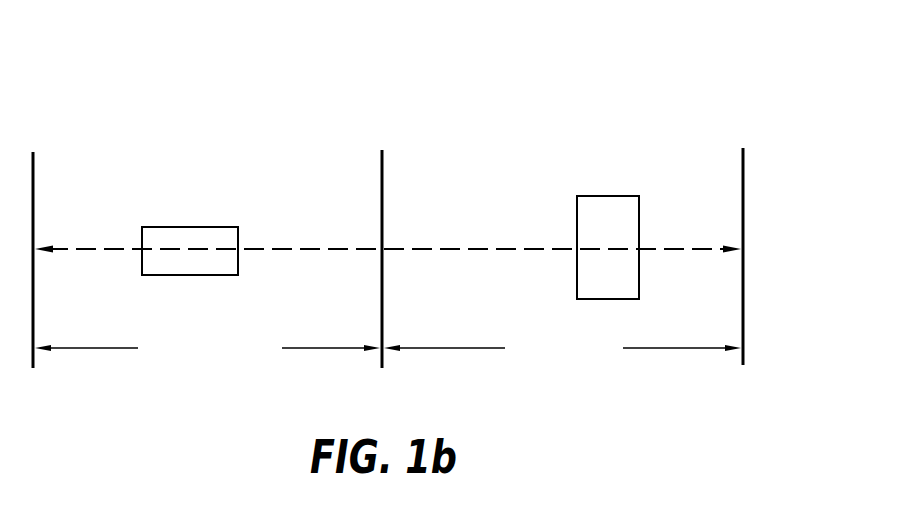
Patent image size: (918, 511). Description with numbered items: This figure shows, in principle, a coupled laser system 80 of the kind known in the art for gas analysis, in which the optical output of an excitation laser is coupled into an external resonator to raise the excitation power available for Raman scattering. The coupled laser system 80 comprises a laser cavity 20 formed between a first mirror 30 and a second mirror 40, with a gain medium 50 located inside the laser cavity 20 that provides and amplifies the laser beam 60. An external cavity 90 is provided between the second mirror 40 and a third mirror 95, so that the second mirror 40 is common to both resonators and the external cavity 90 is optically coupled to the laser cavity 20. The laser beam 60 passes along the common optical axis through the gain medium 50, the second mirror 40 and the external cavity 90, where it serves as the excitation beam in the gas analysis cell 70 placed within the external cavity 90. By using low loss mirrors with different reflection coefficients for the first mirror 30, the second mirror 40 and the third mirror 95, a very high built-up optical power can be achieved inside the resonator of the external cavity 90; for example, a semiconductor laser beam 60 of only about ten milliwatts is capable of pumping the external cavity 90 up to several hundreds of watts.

The coupled laser system 80 is at (340, 90).
The first mirror 30 is at (33, 175).
The second mirror 40 is at (382, 163).
The third mirror 95 is at (743, 158).
The gain medium 50 is at (185, 227).
The gas analysis cell 70 is at (603, 196).
The laser beam 60 is at (293, 249).
The laser cavity 20 is at (207, 350).
The external cavity 90 is at (562, 350).